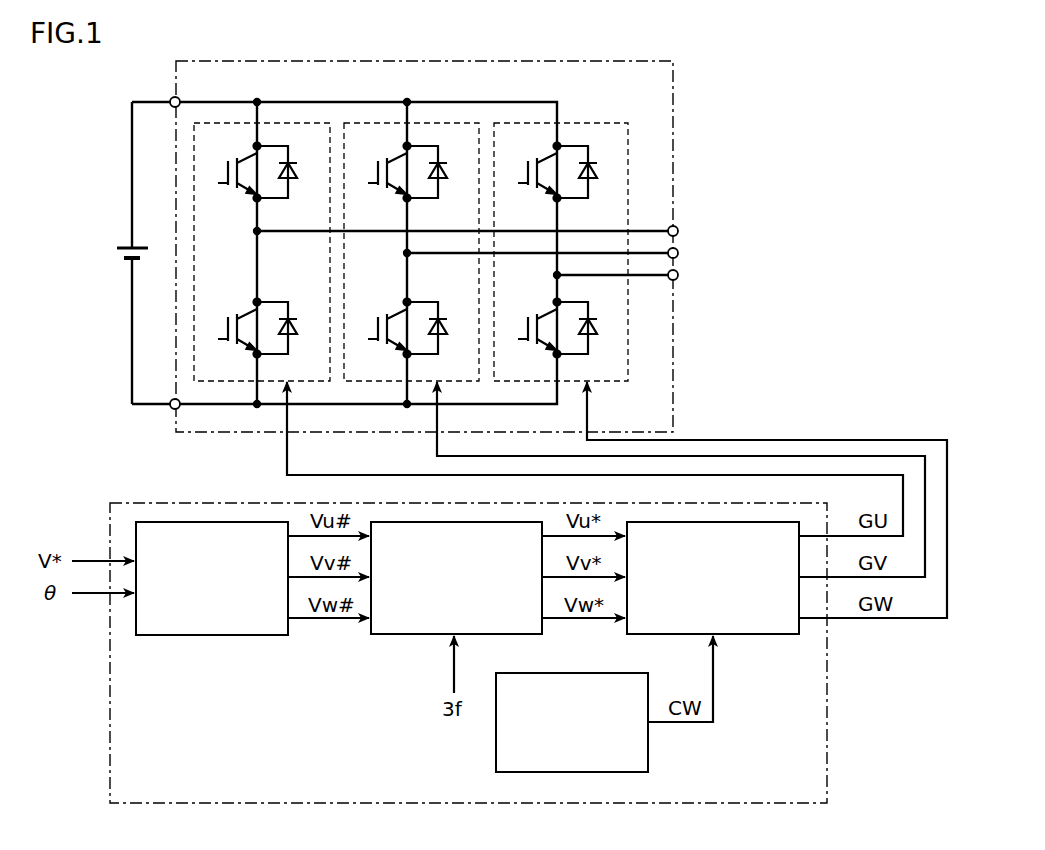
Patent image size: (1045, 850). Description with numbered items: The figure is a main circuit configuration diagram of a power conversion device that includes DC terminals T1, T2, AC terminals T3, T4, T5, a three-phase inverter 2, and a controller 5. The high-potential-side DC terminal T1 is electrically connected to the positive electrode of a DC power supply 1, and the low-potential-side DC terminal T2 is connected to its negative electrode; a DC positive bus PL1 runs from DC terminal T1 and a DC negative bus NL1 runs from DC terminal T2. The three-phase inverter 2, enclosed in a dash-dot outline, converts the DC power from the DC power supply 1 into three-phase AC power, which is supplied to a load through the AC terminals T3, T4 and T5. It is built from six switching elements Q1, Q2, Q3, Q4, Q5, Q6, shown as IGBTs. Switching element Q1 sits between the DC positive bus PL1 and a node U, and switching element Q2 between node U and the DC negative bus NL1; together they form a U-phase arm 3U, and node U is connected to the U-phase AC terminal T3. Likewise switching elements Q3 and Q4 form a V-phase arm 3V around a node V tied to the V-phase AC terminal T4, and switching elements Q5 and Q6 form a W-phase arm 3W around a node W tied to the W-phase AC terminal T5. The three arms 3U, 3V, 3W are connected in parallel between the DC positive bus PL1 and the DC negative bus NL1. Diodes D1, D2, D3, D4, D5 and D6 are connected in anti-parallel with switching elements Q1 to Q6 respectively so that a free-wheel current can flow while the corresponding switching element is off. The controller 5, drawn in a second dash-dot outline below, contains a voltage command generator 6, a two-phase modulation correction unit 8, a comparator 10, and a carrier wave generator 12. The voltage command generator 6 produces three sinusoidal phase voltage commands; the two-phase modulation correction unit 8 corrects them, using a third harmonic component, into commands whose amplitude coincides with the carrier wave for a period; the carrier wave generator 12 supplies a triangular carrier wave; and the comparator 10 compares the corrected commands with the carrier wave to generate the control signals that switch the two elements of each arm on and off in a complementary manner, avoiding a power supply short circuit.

The DC power supply 1 is at (128, 247).
The three-phase inverter 2 is at (675, 152).
The U-phase arm 3U is at (299, 122).
The V-phase arm 3V is at (448, 122).
The W-phase arm 3W is at (598, 122).
The controller 5 is at (829, 745).
The voltage command generator 6 is at (250, 636).
The two-phase modulation correction unit 8 is at (507, 635).
The comparator 10 is at (768, 635).
The carrier wave generator 12 is at (602, 773).
The DC terminal T1 is at (172, 96).
The DC terminal T2 is at (172, 409).
The AC terminal T3 is at (681, 231).
The AC terminal T4 is at (681, 253).
The AC terminal T5 is at (681, 275).
The DC positive bus PL1 is at (198, 100).
The DC negative bus NL1 is at (197, 406).
The switching element Q1 is at (228, 170).
The switching element Q2 is at (228, 326).
The switching element Q3 is at (378, 170).
The switching element Q4 is at (378, 326).
The switching element Q5 is at (528, 170).
The switching element Q6 is at (528, 326).
The diode D1 is at (292, 180).
The diode D2 is at (292, 336).
The diode D3 is at (442, 180).
The diode D4 is at (442, 336).
The diode D5 is at (592, 180).
The diode D6 is at (592, 336).
The node U is at (451, 231).
The node V is at (526, 253).
The node W is at (599, 275).